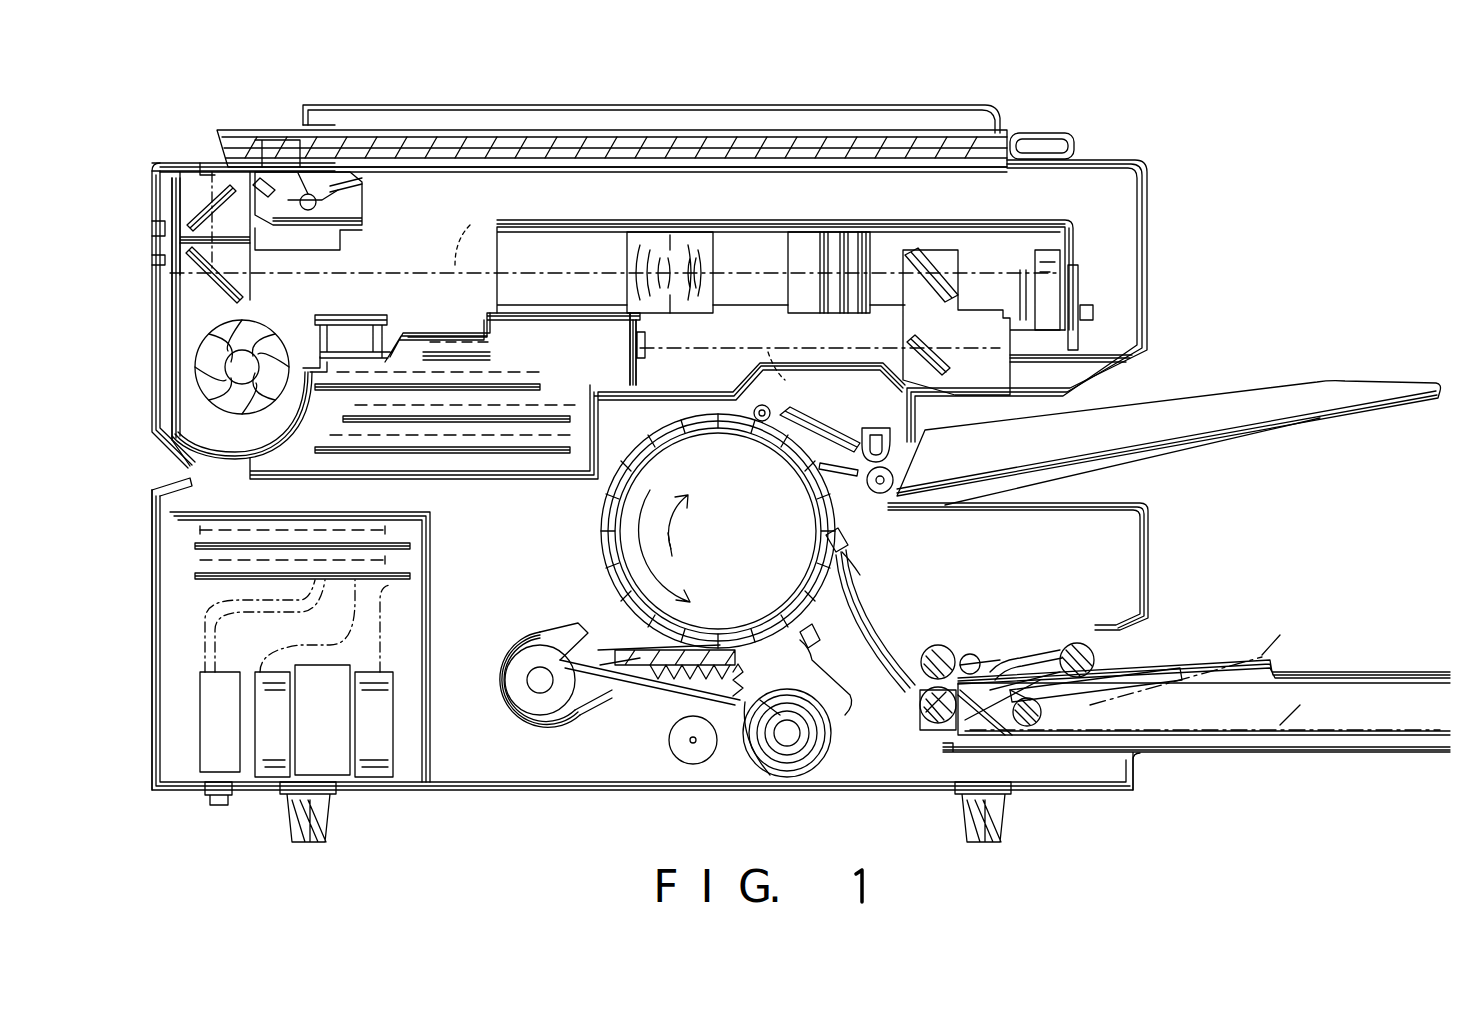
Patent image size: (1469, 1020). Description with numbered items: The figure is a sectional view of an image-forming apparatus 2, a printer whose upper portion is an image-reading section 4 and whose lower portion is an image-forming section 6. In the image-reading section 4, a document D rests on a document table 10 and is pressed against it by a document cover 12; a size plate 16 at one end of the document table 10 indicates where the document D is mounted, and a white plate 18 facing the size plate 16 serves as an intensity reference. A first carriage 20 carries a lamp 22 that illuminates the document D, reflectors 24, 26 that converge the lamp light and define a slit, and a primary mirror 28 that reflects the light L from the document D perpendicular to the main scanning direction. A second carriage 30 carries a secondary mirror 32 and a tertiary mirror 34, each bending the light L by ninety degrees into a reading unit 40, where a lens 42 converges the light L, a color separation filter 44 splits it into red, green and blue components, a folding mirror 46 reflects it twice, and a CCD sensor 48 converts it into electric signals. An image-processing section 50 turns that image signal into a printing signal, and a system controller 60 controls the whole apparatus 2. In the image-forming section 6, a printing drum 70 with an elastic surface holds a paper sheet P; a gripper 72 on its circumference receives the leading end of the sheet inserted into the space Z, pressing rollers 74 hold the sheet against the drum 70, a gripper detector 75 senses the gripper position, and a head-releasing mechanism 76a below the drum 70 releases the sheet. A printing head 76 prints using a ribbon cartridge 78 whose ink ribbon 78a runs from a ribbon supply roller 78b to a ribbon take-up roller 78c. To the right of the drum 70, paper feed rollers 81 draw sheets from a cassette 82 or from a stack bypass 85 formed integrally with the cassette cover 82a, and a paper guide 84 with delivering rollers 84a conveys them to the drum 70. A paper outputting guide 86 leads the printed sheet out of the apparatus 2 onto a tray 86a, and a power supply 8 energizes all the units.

The image-forming apparatus 2 is at (1117, 104).
The image-reading section 4 is at (1150, 315).
The image-forming section 6 is at (152, 515).
The power supply 8 is at (430, 735).
The document table 10 is at (458, 172).
The document cover 12 is at (942, 125).
The size plate 16 is at (283, 160).
The white plate 18 is at (262, 175).
The first carriage 20 is at (361, 241).
The lamp 22 is at (360, 190).
The reflector 24 is at (345, 183).
The reflector 26 is at (232, 178).
The primary mirror 28 is at (240, 270).
The second carriage 30 is at (197, 289).
The secondary mirror 32 is at (202, 166).
The tertiary mirror 34 is at (165, 248).
The reading unit 40 is at (913, 220).
The lens 42 is at (672, 245).
The color separation filter 44 is at (805, 235).
The folding mirror 46 is at (958, 290).
The CCD sensor 48 is at (627, 345).
The image-processing section 50 is at (445, 335).
The system controller 60 is at (492, 492).
The printing drum 70 is at (604, 512).
The gripper 72 is at (848, 540).
The pressing rollers 74 is at (758, 422).
The gripper detector 75 is at (830, 660).
The printing head 76 is at (655, 690).
The head-releasing mechanism 76a is at (690, 755).
The ribbon cartridge 78 is at (518, 624).
The ink ribbon 78a is at (835, 712).
The ribbon supply roller 78b is at (795, 748).
The ribbon take-up roller 78c is at (540, 695).
The paper feed rollers 81 is at (1055, 648).
The cassette 82 is at (1410, 738).
The cassette cover 82a is at (1225, 668).
The paper guide 84 is at (875, 648).
The delivering rollers 84a is at (940, 645).
The stack bypass 85 is at (1140, 660).
The paper outputting guide 86 is at (810, 448).
The tray 86a is at (1197, 410).
The document D is at (358, 140).
The light L is at (615, 292).
The paper sheet P is at (1205, 669).
The space Z is at (859, 573).